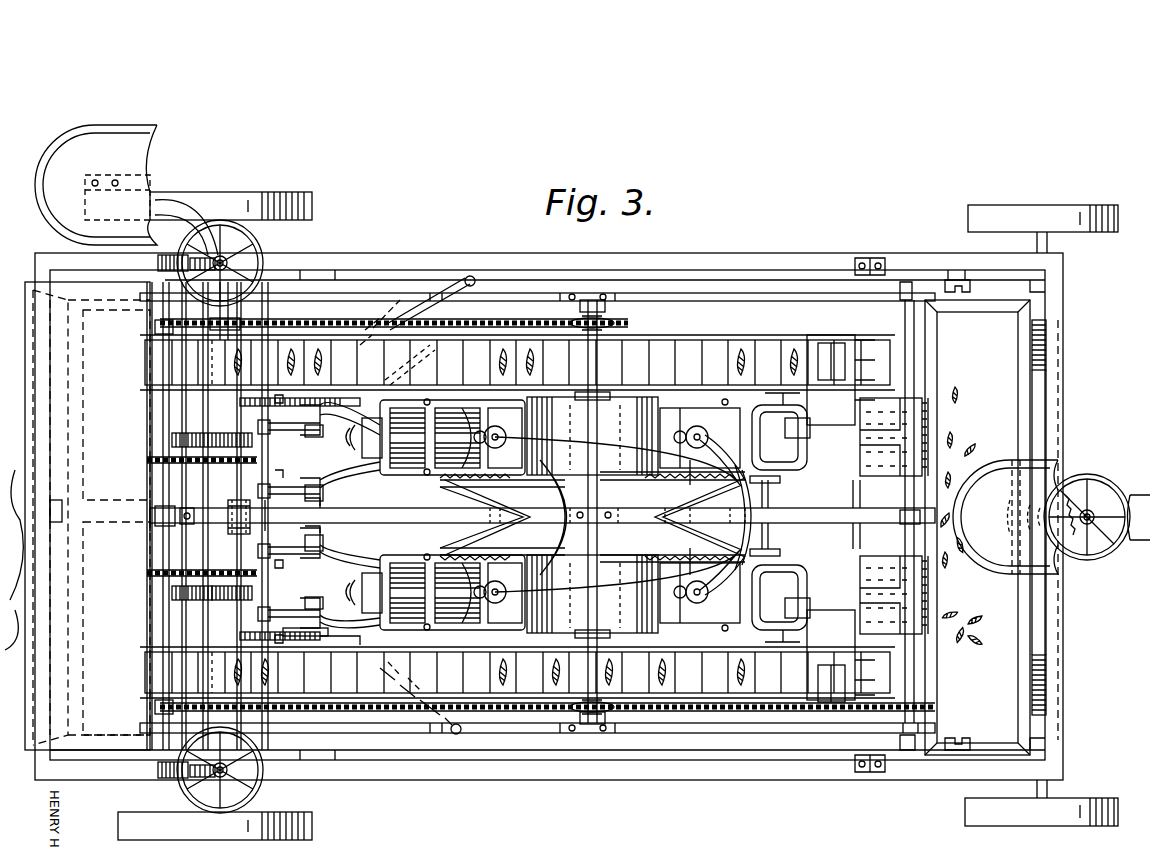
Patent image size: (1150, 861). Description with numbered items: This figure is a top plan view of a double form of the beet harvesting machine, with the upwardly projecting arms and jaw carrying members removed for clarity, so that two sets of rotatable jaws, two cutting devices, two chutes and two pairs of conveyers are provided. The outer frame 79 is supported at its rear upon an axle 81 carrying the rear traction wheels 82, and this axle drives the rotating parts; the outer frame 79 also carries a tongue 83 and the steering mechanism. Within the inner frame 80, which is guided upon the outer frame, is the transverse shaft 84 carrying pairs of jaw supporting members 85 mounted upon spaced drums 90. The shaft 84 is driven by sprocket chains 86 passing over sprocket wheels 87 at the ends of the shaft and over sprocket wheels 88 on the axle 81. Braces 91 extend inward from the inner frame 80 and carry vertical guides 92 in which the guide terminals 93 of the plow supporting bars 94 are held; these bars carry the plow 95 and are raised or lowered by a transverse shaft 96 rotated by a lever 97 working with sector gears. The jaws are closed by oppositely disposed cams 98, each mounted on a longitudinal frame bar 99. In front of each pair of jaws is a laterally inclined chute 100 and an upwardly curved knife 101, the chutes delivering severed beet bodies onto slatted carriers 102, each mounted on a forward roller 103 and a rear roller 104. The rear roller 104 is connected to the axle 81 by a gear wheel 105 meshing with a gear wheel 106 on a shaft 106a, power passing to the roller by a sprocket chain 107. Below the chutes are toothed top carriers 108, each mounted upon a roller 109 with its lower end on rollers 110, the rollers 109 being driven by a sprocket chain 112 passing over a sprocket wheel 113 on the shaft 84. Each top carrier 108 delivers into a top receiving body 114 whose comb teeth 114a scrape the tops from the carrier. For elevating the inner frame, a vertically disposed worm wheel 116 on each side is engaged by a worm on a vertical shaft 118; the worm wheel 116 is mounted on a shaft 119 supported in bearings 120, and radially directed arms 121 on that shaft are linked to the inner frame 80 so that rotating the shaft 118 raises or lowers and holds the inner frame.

The outer frame 79 is at (430, 247).
The inner frame 80 is at (470, 297).
The axle 81 is at (202, 544).
The rear traction wheels 82 is at (245, 195).
The tongue 83 is at (1128, 490).
The transverse shaft 84 is at (598, 368).
The jaw supporting members 85 is at (410, 405).
The sprocket chains 86 is at (527, 322).
The sprocket wheels 87 is at (630, 325).
The sprocket wheels 88 is at (222, 333).
The spaced drums 90 is at (592, 515).
The braces 91 is at (333, 400).
The vertical guides 92 is at (325, 645).
The guide terminals 93 is at (318, 502).
The plow supporting bars 94 is at (325, 480).
The plow 95 is at (420, 675).
The transverse shaft 96 is at (262, 470).
The lever 97 is at (296, 645).
The cams 98 is at (640, 490).
The frame bar 99 is at (542, 517).
The chute 100 is at (841, 518).
The knife 101 is at (805, 430).
The carriers 102 is at (715, 350).
The roller 103 is at (915, 390).
The roller 104 is at (152, 402).
The gear wheel 105 is at (170, 594).
The gear wheel 106 is at (237, 600).
The shaft 106a is at (210, 430).
The sprocket chain 107 is at (215, 575).
The top carriers 108 is at (900, 428).
The roller 109 is at (900, 530).
The rollers 110 is at (770, 483).
The sprocket chain 112 is at (730, 710).
The sprocket wheel 113 is at (580, 710).
The top receiving body 114 is at (991, 527).
The comb teeth 114a is at (930, 455).
The worm wheel 116 is at (165, 260).
The vertically disposed shaft 118 is at (258, 772).
The shaft 119 is at (178, 301).
The bearings 120 is at (178, 512).
The arms 121 is at (228, 262).